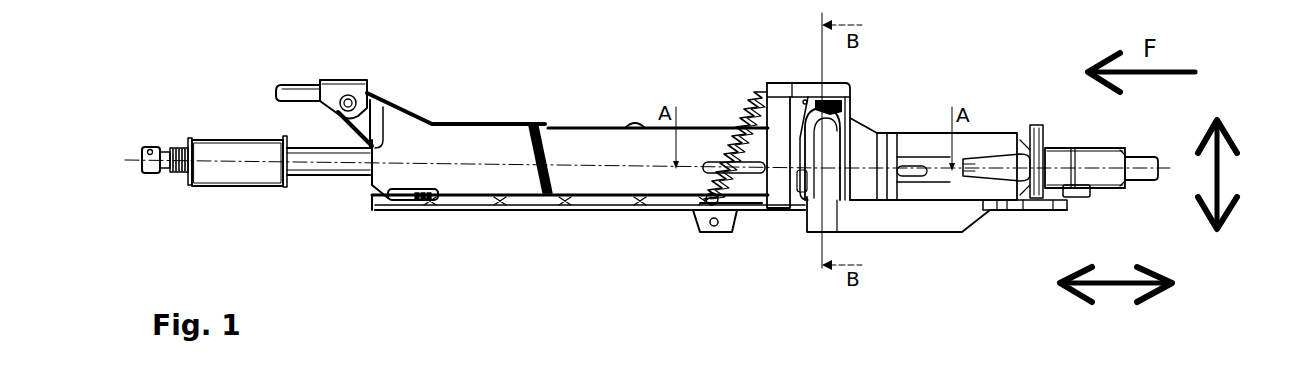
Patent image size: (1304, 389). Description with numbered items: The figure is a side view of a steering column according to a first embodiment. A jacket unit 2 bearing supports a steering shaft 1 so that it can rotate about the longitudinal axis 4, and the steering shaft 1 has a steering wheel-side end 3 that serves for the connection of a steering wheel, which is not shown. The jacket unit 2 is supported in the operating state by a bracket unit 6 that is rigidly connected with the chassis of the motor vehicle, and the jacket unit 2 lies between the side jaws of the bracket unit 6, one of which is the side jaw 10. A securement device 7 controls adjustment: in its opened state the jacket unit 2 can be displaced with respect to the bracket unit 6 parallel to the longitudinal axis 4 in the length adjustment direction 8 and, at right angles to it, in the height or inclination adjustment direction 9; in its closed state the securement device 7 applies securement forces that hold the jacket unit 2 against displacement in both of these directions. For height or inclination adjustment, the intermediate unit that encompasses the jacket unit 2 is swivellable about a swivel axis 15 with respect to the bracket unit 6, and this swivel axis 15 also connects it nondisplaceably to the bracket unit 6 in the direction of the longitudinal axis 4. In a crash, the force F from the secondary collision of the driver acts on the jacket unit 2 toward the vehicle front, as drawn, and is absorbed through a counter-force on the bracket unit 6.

The steering shaft 1 is at (1087, 160).
The jacket unit 2 is at (923, 128).
The steering wheel-side end 3 is at (1158, 175).
The longitudinal axis 4 is at (1098, 170).
The bracket unit 6 is at (786, 72).
The securement device 7 is at (848, 100).
The length adjustment direction 8 is at (1108, 280).
The height or inclination adjustment direction 9 is at (1222, 172).
The side jaw 10 is at (788, 192).
The swivel axis 15 is at (355, 100).